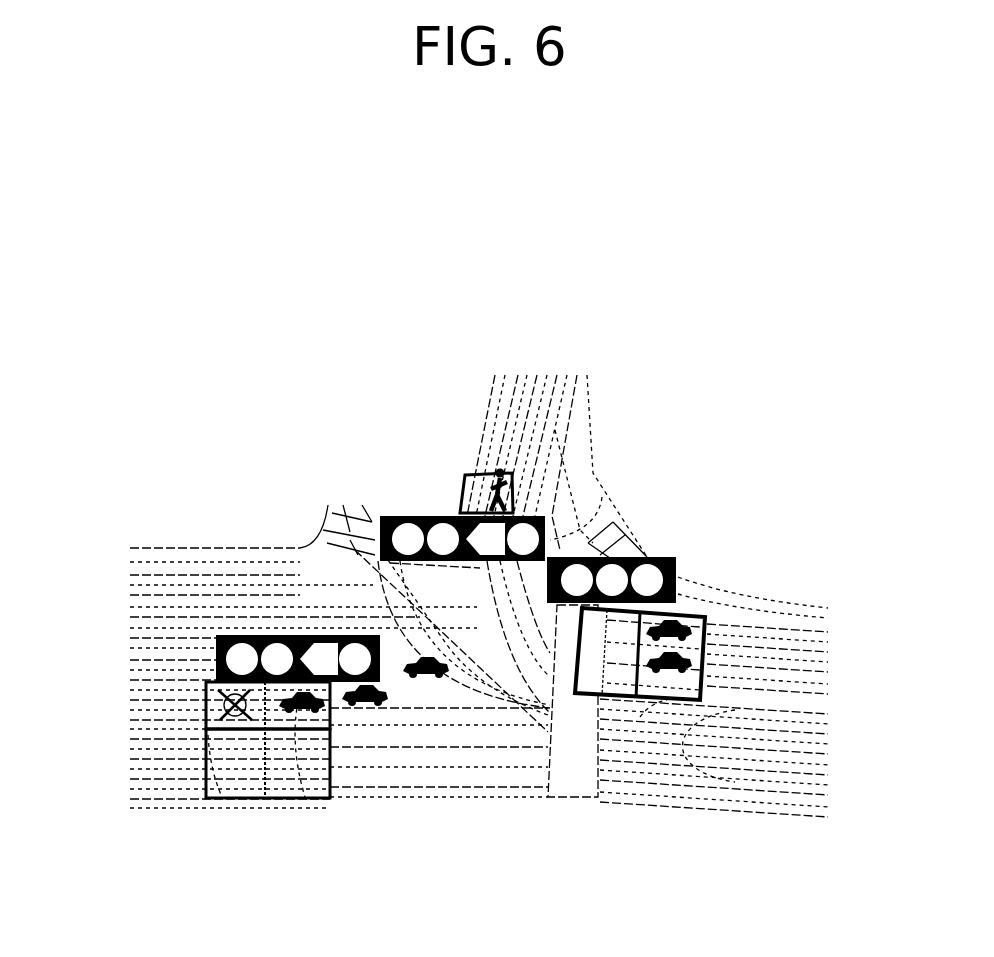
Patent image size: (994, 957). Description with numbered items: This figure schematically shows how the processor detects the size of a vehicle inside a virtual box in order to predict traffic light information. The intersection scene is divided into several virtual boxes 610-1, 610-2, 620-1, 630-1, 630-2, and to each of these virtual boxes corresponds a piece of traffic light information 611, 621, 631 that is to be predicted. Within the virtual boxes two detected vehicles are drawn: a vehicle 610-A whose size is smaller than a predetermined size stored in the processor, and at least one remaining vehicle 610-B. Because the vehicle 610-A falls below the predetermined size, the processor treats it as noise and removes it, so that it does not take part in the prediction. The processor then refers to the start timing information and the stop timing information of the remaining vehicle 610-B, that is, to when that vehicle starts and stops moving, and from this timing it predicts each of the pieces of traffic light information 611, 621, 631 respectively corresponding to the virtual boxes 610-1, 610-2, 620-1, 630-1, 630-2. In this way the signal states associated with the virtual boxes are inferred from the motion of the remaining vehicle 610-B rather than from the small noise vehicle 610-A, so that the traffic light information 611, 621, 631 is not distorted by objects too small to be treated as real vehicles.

The traffic light information 611 is at (302, 635).
The virtual box 610-1 is at (205, 702).
The virtual box 610-2 is at (205, 763).
The vehicle of a size smaller than a predetermined size 610-A is at (220, 797).
The remaining vehicle 610-B is at (305, 797).
The virtual box 620-1 is at (681, 703).
The traffic light information 621 is at (678, 580).
The virtual box 630-1 is at (515, 516).
The virtual box 630-2 is at (472, 473).
The traffic light information 631 is at (655, 560).